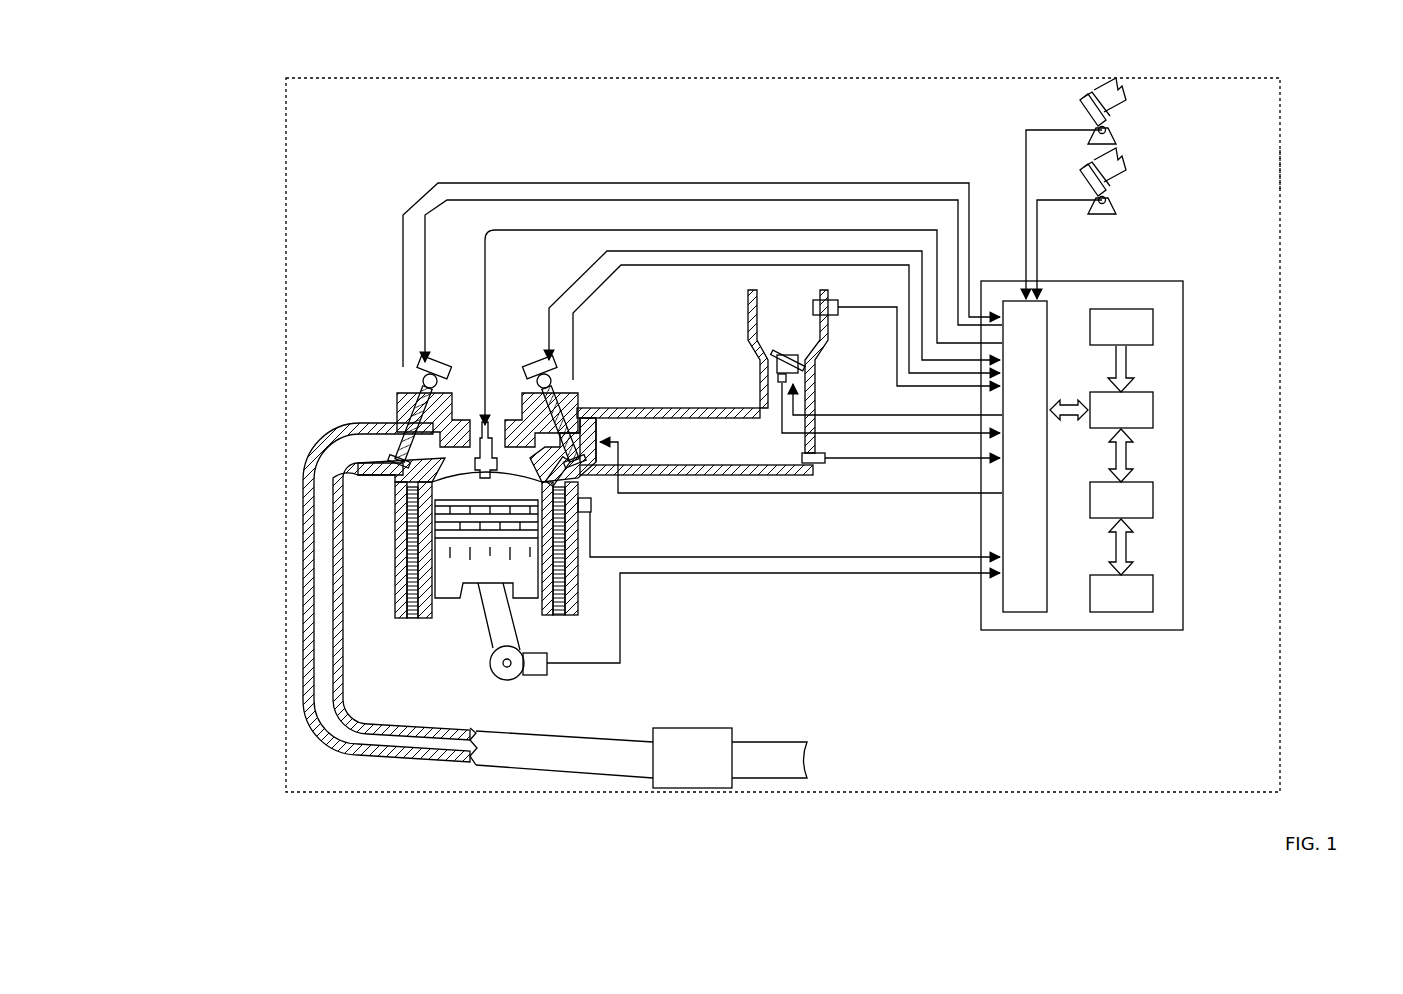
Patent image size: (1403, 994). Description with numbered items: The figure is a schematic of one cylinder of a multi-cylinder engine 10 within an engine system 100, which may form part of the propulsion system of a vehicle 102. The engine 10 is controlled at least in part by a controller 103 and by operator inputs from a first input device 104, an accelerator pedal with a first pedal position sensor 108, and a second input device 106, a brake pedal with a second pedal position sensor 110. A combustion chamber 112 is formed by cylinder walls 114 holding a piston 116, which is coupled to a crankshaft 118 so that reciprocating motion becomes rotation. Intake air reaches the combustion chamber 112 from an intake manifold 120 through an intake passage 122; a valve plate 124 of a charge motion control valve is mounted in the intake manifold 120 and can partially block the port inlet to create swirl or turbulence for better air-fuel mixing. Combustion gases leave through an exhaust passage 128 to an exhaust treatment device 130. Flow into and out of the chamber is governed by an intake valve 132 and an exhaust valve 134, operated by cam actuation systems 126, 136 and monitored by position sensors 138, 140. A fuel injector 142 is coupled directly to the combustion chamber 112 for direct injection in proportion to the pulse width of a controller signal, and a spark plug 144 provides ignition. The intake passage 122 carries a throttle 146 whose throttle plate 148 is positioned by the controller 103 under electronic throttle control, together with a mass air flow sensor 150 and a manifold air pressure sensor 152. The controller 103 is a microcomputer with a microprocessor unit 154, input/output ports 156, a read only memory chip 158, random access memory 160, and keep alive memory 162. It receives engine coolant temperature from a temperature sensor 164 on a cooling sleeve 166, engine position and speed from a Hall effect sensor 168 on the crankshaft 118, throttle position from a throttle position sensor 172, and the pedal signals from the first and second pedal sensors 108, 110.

The engine system 100 is at (196, 56).
The engine 10 is at (350, 306).
The vehicle 102 is at (1283, 170).
The controller 103 is at (1183, 283).
The first input device 104 is at (1090, 182).
The second input device 106 is at (1088, 114).
The first pedal position sensor 108 is at (1115, 206).
The second pedal position sensor 110 is at (1110, 136).
The combustion chamber 112 is at (437, 547).
The cylinder walls 114 is at (437, 607).
The piston 116 is at (472, 573).
The crankshaft 118 is at (500, 680).
The intake manifold 120 is at (695, 441).
The intake passage 122 is at (788, 371).
The valve plate 124 is at (597, 412).
The cam actuation system 126 is at (534, 366).
The exhaust passage 128 is at (390, 594).
The exhaust treatment device 130 is at (641, 758).
The intake valve 132 is at (490, 448).
The exhaust valve 134 is at (448, 462).
The cam actuation system 136 is at (440, 366).
The position sensor 138 is at (568, 384).
The position sensor 140 is at (413, 386).
The fuel injector 142 is at (584, 480).
The spark plug 144 is at (437, 513).
The throttle 146 is at (805, 360).
The throttle plate 148 is at (772, 360).
The mass air flow sensor 150 is at (836, 302).
The manifold air pressure sensor 152 is at (819, 464).
The microprocessor unit 154 is at (1153, 412).
The input/output ports 156 is at (1050, 302).
The read only memory chip 158 is at (1153, 325).
The random access memory 160 is at (1153, 502).
The keep alive memory 162 is at (1153, 590).
The temperature sensor 164 is at (591, 510).
The cooling sleeve 166 is at (566, 580).
The Hall effect sensor 168 is at (537, 675).
The throttle position sensor 172 is at (780, 382).